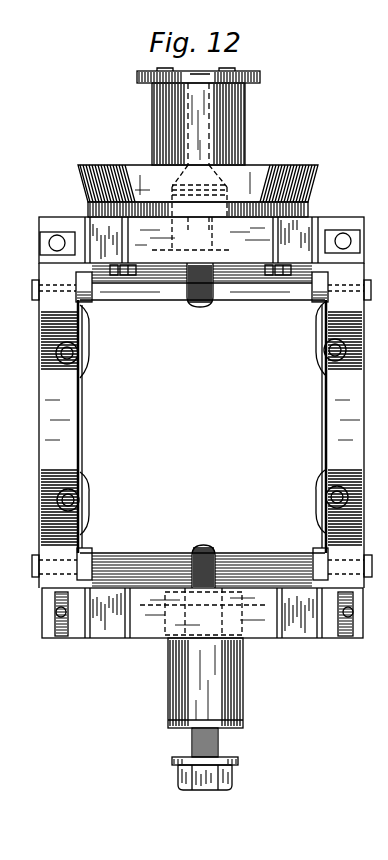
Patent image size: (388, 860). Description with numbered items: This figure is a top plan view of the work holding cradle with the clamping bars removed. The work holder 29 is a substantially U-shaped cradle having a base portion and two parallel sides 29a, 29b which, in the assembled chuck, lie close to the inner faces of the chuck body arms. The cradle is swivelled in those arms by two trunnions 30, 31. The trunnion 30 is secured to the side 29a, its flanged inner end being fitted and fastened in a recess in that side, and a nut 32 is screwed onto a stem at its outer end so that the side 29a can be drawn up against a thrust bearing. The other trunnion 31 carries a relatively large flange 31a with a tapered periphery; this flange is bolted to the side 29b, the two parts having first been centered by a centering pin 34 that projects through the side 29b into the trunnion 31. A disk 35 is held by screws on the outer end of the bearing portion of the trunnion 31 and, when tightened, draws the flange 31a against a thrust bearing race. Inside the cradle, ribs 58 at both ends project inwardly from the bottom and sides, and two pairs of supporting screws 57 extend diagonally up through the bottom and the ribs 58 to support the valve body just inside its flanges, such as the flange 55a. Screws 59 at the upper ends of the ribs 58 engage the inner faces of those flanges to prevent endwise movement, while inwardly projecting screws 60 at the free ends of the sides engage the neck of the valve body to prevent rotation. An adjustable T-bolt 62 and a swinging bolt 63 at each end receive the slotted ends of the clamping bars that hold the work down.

The work holder 29 is at (201, 425).
The side of the cradle 29a is at (166, 598).
The side of the cradle 29b is at (247, 238).
The trunnion 30 is at (175, 678).
The trunnion 31 is at (160, 112).
The flange 31a is at (140, 167).
The nut 32 is at (180, 777).
The centering pin 34 is at (240, 163).
The disk 35 is at (137, 76).
The flange of the valve body 55a is at (0, 375).
The supporting screws 57 is at (80, 355).
The ribs 58 is at (67, 448).
The screws 59 is at (93, 298).
The screws 60 is at (200, 307).
The T-bolt 62 is at (42, 240).
The swinging bolt 63 is at (56, 613).